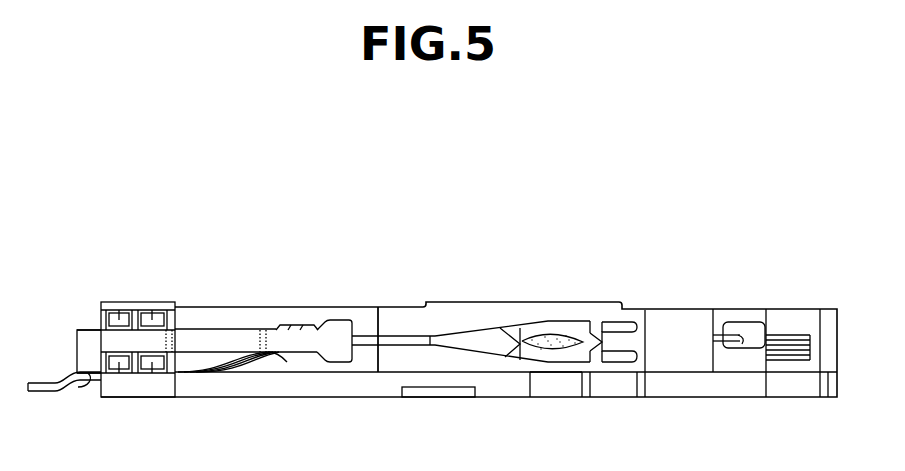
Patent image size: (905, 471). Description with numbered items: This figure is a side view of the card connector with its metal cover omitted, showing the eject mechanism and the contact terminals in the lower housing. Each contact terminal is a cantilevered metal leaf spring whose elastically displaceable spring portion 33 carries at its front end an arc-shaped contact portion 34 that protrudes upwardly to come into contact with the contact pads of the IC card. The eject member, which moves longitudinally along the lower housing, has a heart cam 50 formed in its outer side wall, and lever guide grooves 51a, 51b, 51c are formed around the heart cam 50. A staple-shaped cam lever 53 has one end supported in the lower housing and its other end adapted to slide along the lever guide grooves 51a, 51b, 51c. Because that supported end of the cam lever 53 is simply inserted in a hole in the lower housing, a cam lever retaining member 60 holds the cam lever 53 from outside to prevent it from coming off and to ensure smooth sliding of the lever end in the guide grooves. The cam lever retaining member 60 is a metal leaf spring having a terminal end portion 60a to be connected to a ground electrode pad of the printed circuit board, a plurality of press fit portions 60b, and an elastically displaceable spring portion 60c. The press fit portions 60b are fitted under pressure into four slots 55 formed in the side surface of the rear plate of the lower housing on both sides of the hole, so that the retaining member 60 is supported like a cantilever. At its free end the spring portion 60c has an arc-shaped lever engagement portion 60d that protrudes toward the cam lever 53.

The spring portion 33 is at (247, 370).
The contact portion 34 is at (288, 325).
The heart cam 50 is at (557, 320).
The lever guide groove 51a is at (458, 335).
The lever guide groove 51b is at (541, 362).
The lever guide groove 51c is at (602, 318).
The cam lever 53 is at (390, 338).
The slots 55 is at (171, 306).
The cam lever retaining member 60 is at (236, 340).
The terminal end portion 60a is at (87, 357).
The press fit portions 60b is at (120, 325).
The spring portion 60c is at (298, 353).
The lever engagement portion 60d is at (338, 340).